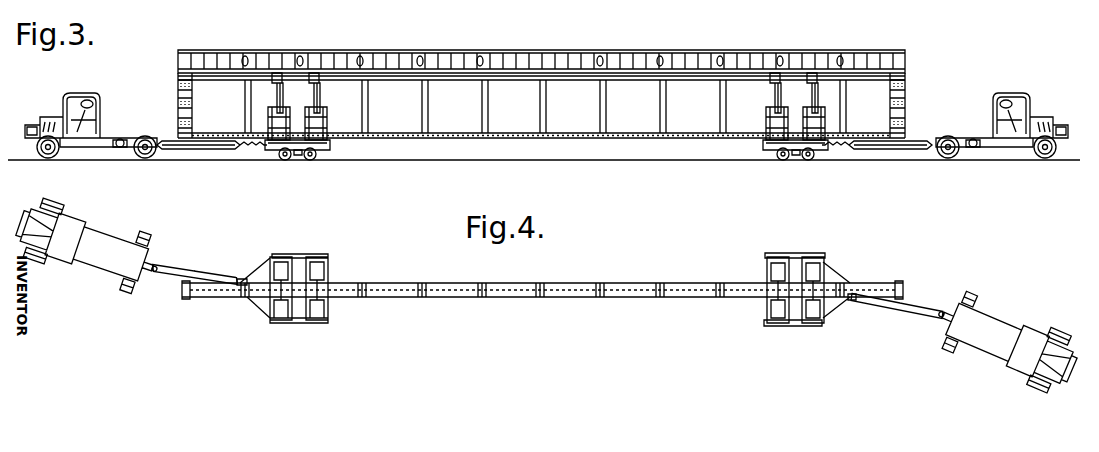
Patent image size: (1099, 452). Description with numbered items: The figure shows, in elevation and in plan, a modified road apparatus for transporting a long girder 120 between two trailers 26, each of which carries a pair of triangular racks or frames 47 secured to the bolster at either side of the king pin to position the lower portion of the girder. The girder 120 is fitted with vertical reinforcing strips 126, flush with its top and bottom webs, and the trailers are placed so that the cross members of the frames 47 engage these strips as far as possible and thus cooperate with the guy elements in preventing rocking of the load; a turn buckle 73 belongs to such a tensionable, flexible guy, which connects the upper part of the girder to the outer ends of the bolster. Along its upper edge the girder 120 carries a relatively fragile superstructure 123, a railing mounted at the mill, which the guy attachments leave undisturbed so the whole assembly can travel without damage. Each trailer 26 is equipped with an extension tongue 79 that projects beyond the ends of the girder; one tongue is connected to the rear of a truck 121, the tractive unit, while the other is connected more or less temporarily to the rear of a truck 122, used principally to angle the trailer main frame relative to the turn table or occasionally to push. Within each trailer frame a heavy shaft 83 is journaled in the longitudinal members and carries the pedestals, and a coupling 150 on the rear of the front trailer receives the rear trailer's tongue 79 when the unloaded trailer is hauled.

In FIG. 3, the trailer 26 is at (539, 140).
In FIG. 3, the triangular rack or frame 47 is at (327, 113).
In FIG. 3, the turn buckle 73 is at (276, 103).
In FIG. 3, the extension tongue 79 is at (213, 151).
In FIG. 4, the extension tongue 79 is at (196, 268).
In FIG. 3, the heavy shaft 83 is at (298, 156).
In FIG. 3, the girder 120 is at (676, 120).
In FIG. 4, the girder 120 is at (412, 282).
In FIG. 3, the truck 121 is at (116, 136).
In FIG. 4, the truck 121 is at (113, 238).
In FIG. 3, the truck 122 is at (977, 137).
In FIG. 4, the truck 122 is at (988, 332).
In FIG. 3, the superstructure 123 is at (575, 40).
In FIG. 4, the superstructure 123 is at (558, 298).
In FIG. 3, the vertical reinforcing strip 126 is at (602, 120).
In FIG. 3, the coupling 150 is at (330, 152).